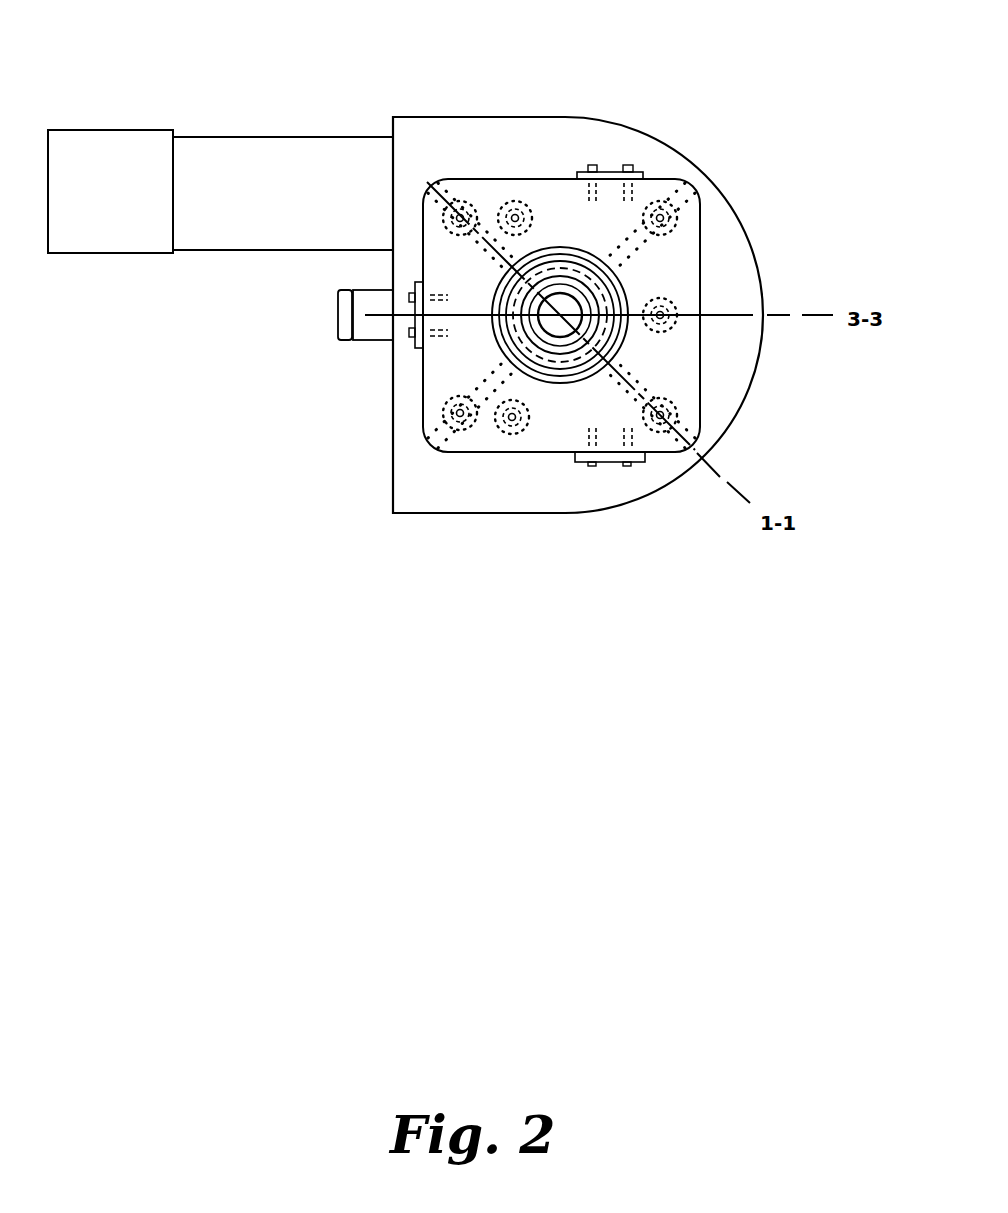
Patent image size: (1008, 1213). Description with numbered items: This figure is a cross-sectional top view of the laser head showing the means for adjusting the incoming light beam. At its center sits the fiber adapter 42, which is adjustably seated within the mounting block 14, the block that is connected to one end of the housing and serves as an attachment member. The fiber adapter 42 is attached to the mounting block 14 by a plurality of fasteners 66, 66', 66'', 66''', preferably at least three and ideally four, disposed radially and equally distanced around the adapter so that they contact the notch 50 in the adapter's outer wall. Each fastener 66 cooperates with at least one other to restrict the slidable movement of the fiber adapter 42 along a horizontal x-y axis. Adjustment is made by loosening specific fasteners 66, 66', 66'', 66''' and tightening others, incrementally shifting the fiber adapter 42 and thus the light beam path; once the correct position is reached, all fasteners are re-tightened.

The mounting block 14 is at (425, 138).
The fiber adapter 42 is at (493, 332).
The notch 50 is at (563, 350).
The fastener 66 is at (508, 166).
The fastener 66' is at (721, 259).
The fastener 66'' is at (727, 394).
The fastener 66''' is at (518, 469).